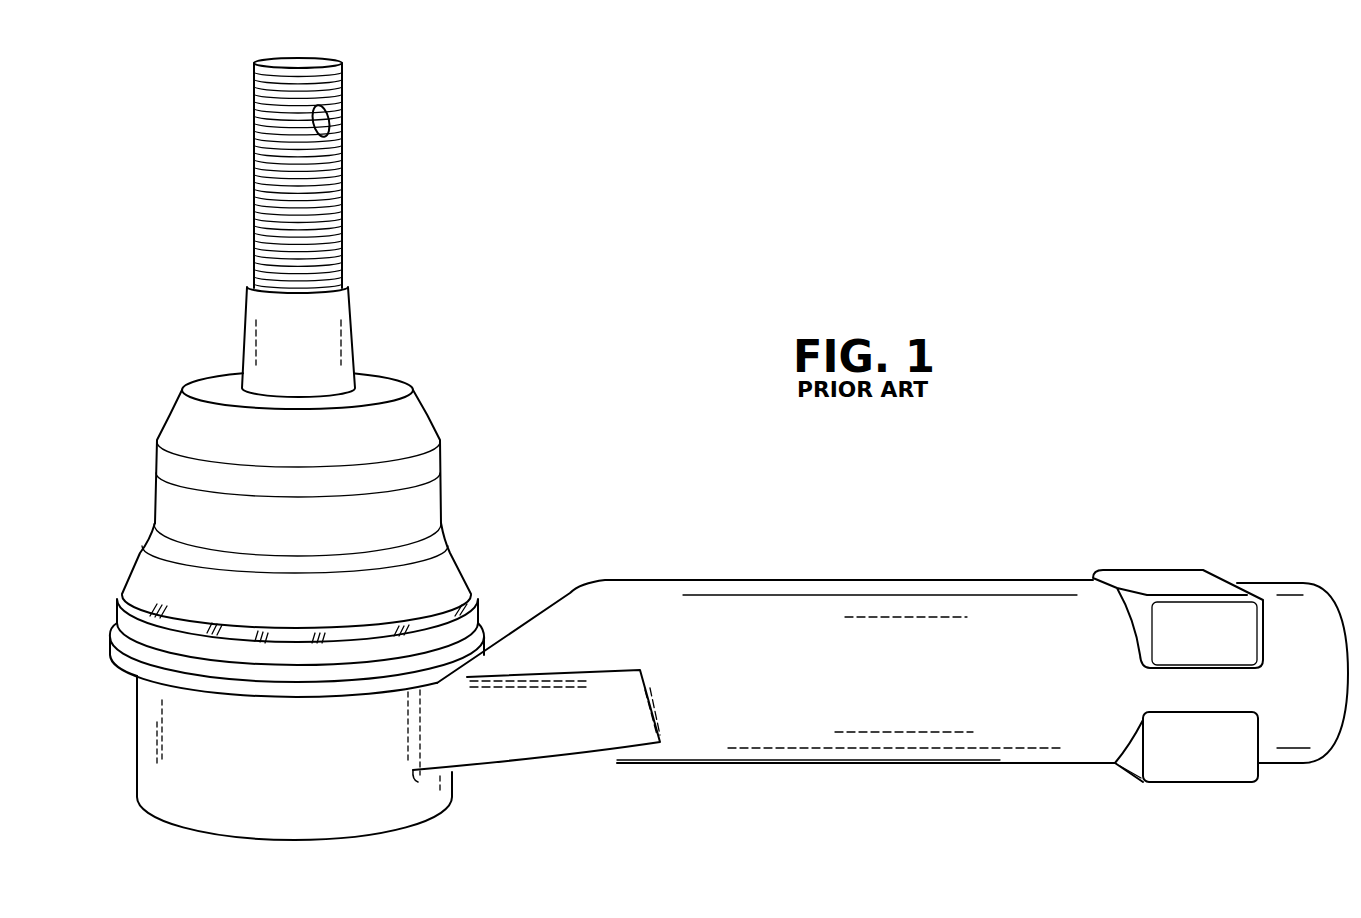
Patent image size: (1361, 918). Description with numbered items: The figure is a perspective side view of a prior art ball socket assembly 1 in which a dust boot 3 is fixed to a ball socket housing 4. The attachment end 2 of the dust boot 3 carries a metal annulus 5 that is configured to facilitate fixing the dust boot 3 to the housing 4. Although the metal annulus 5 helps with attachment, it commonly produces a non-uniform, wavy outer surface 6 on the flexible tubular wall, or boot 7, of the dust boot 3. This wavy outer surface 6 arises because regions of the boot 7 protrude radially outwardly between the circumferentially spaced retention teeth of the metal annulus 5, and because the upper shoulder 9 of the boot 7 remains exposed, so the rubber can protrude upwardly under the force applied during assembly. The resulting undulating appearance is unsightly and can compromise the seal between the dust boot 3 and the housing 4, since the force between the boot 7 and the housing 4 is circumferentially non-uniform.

The ball socket assembly 1 is at (482, 116).
The attachment end 2 is at (463, 625).
The dust boot 3 is at (456, 451).
The ball socket housing 4 is at (138, 700).
The metal annulus 5 is at (117, 617).
The outer surface 6 is at (313, 626).
The flexible tubular wall 7 is at (439, 567).
The upper shoulder 9 is at (158, 615).